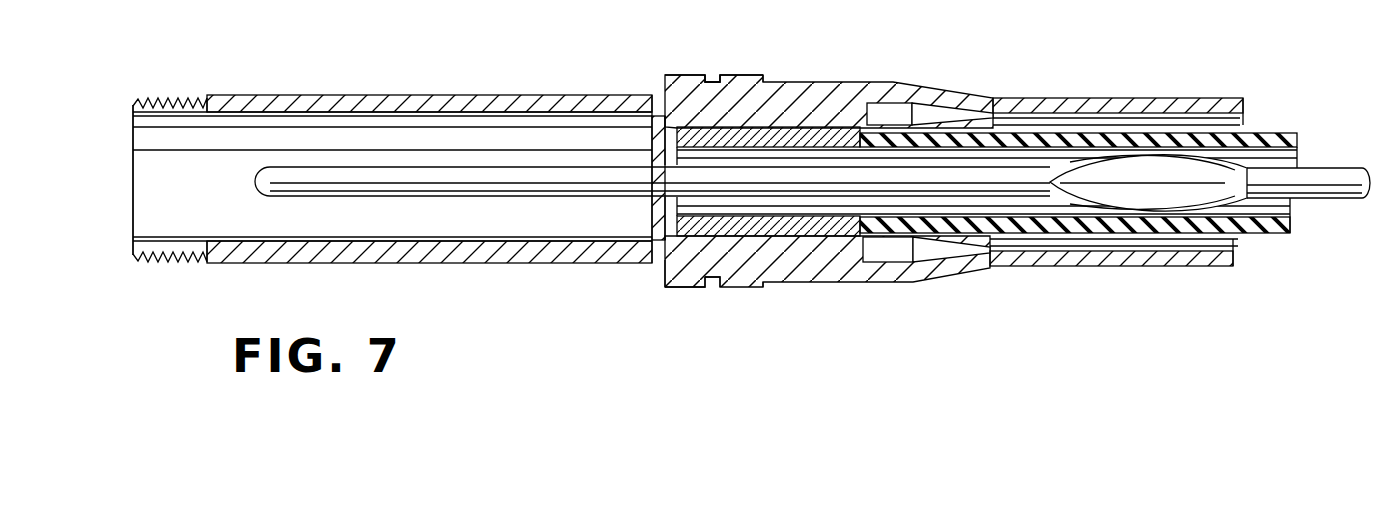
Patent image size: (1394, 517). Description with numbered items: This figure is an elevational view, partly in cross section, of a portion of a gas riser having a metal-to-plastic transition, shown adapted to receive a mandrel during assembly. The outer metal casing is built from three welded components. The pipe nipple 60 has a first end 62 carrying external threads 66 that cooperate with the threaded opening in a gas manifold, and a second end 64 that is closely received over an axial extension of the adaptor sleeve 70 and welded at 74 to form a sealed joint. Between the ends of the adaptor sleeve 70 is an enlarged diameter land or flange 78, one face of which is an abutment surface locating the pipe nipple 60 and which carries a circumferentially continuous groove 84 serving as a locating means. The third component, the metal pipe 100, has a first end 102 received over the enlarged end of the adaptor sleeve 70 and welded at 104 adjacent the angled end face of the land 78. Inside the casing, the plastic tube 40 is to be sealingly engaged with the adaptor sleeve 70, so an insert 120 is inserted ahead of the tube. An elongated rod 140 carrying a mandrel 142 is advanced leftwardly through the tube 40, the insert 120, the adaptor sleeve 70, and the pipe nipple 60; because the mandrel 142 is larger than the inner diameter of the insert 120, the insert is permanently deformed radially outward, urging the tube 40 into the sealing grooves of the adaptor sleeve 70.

The plastic tube 40 is at (945, 236).
The pipe nipple 60 is at (337, 95).
The first end of the pipe nipple 62 is at (133, 108).
The second end of the pipe nipple 64 is at (657, 98).
The external threads 66 is at (196, 99).
The adaptor sleeve 70 is at (832, 107).
The weld 74 is at (660, 267).
The land or flange 78 is at (677, 288).
The groove 84 is at (712, 277).
The metal pipe 100 is at (1010, 92).
The first end of the metal pipe 102 is at (767, 92).
The weld 104 is at (757, 83).
The insert 120 is at (777, 218).
The elongated rod 140 is at (262, 191).
The mandrel 142 is at (1140, 197).